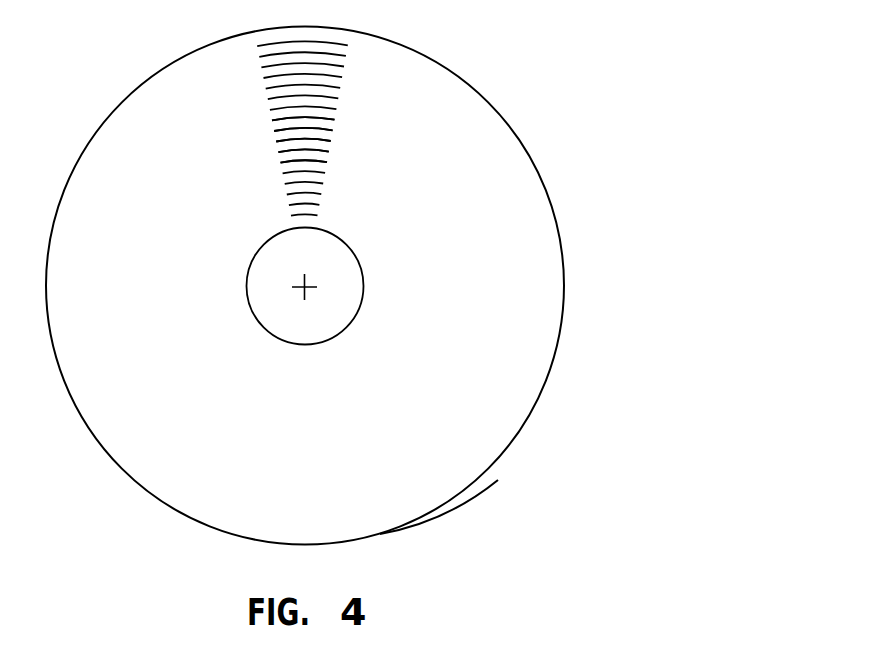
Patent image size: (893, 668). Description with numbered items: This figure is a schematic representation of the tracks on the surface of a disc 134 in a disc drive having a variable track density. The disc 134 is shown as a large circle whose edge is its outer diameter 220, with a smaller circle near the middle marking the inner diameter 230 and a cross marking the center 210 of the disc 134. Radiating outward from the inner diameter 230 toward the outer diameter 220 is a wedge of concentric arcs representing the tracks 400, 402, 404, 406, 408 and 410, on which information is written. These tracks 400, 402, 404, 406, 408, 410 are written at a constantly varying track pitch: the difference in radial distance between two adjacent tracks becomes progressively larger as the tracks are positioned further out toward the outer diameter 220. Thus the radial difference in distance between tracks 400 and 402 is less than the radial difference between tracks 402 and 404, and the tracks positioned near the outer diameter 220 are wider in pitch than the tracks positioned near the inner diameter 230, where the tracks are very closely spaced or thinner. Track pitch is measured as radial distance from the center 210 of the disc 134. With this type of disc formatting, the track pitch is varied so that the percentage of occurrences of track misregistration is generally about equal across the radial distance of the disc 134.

The disc 134 is at (448, 502).
The outer diameter 220 is at (182, 57).
The inner diameter 230 is at (361, 303).
The center 210 is at (301, 290).
The track 400 is at (323, 170).
The track 402 is at (327, 157).
The track 404 is at (328, 149).
The track 406 is at (328, 135).
The track 408 is at (330, 123).
The track 410 is at (328, 115).